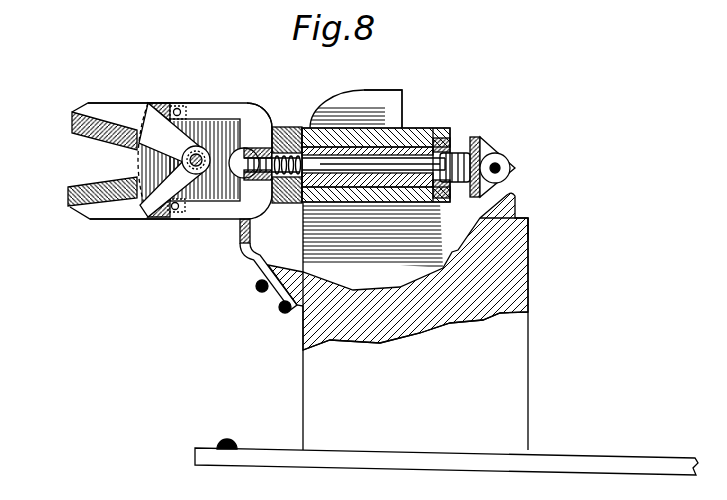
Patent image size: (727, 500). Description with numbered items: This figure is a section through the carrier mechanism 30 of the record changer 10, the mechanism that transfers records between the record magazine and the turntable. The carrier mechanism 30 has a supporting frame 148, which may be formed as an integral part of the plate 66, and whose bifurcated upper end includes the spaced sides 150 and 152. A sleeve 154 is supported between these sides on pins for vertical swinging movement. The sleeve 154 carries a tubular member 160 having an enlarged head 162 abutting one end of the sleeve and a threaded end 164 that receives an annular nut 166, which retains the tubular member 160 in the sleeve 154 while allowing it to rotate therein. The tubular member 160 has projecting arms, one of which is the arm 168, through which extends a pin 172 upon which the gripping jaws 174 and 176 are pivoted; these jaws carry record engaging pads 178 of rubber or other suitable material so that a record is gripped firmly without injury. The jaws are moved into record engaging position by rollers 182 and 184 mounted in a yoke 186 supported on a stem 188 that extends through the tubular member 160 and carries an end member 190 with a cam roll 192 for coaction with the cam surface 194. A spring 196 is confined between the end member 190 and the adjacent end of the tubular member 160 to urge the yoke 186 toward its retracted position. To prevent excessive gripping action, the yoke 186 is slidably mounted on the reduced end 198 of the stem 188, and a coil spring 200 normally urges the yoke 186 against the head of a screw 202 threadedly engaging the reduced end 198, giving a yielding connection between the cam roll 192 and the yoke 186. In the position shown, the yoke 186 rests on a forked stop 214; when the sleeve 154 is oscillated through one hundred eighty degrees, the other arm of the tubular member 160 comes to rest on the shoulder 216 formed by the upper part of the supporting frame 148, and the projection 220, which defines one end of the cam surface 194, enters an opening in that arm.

The apparatus 10 is at (612, 170).
The carrier mechanism 30 is at (403, 89).
The plate 66 is at (650, 462).
The supporting frame 148 is at (522, 326).
The side 150 is at (510, 377).
The side 152 is at (385, 78).
The sleeve 154 is at (412, 127).
The tubular member 160 is at (280, 153).
The enlarged head 162 is at (287, 127).
The threaded end 164 is at (392, 187).
The annular nut 166 is at (474, 137).
The projecting arm 168 is at (163, 88).
The pin 172 is at (147, 214).
The gripping jaw 174 is at (112, 103).
The gripping jaw 176 is at (107, 207).
The record engaging pads 178 is at (72, 122).
The roller 182 is at (180, 108).
The roller 184 is at (175, 212).
The yoke 186 is at (217, 210).
The stem 188 is at (395, 163).
The end member 190 is at (483, 140).
The cam roll 192 is at (507, 160).
The cam surface 194 is at (453, 257).
The spring 196 is at (452, 185).
The reduced end 198 is at (313, 220).
The coil spring 200 is at (278, 196).
The screw 202 is at (233, 118).
The forked stop 214 is at (272, 295).
The shoulder 216 is at (528, 215).
The projection 220 is at (517, 200).